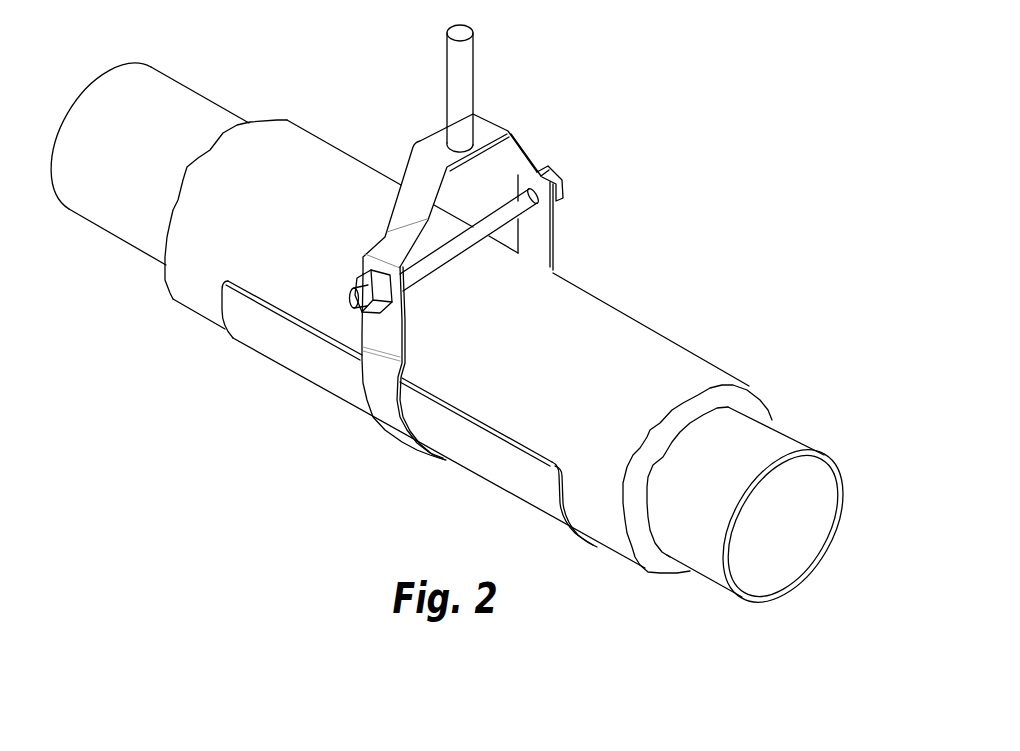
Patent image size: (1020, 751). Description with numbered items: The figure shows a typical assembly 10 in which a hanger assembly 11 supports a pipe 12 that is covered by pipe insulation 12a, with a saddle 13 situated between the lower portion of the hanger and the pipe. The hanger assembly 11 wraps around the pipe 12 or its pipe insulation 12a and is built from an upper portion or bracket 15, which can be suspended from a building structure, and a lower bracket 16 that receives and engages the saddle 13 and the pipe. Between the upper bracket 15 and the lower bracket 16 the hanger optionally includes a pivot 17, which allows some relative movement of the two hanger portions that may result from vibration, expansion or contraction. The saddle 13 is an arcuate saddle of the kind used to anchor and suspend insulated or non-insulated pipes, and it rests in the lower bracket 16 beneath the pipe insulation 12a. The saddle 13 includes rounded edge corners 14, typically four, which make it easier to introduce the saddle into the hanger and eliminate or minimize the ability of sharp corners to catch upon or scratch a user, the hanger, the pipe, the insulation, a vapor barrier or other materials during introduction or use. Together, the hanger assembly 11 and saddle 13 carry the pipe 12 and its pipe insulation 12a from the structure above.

The assembly 10 is at (357, 118).
The hanger assembly 11 is at (582, 130).
The pipe 12 is at (833, 537).
The pipe insulation 12a is at (630, 345).
The saddle 13 is at (505, 480).
The rounded edge corners 14 is at (540, 470).
The upper portion or bracket 15 is at (480, 116).
The lower bracket 16 is at (390, 424).
The pivot 17 is at (353, 297).